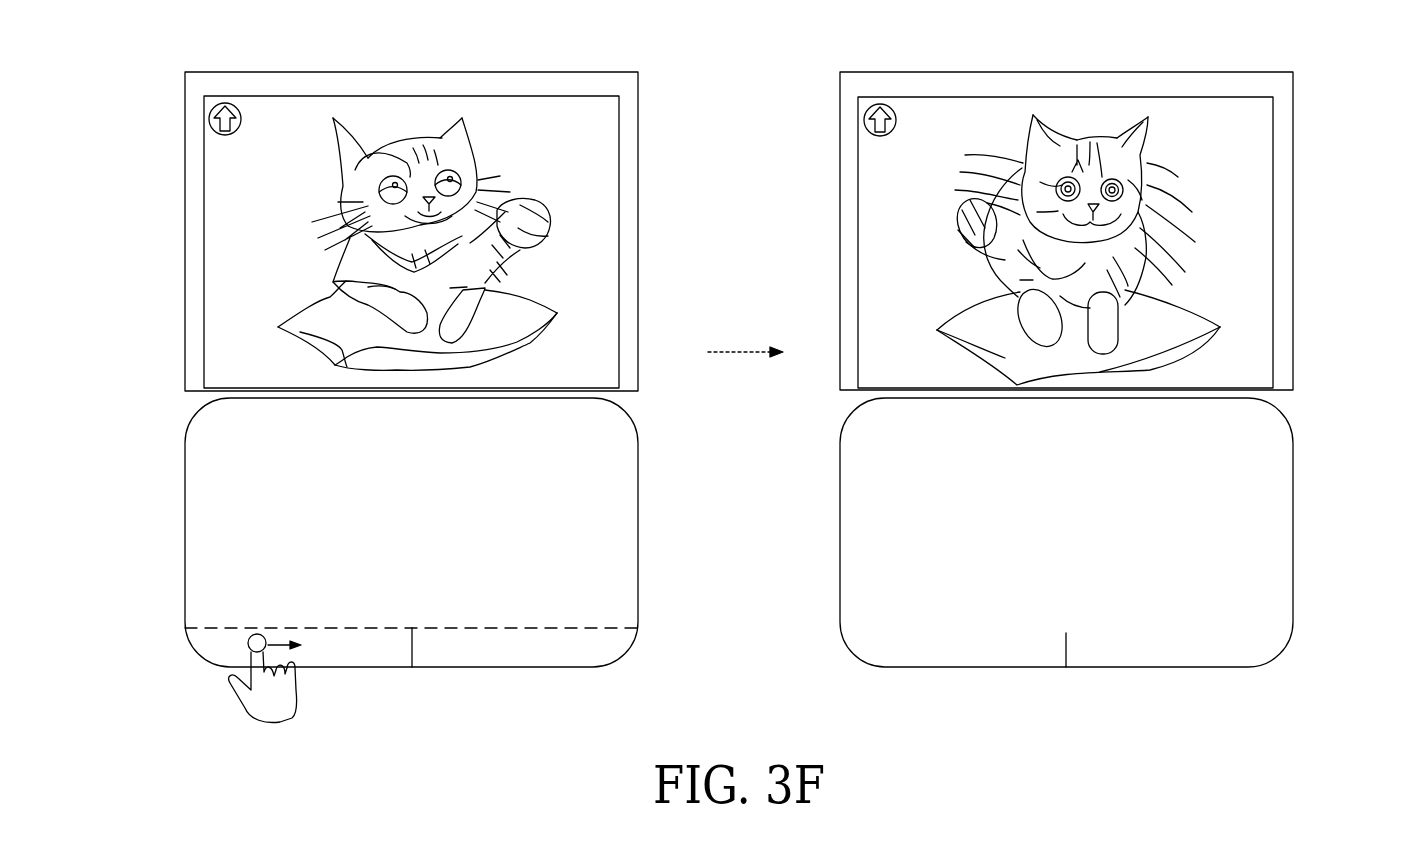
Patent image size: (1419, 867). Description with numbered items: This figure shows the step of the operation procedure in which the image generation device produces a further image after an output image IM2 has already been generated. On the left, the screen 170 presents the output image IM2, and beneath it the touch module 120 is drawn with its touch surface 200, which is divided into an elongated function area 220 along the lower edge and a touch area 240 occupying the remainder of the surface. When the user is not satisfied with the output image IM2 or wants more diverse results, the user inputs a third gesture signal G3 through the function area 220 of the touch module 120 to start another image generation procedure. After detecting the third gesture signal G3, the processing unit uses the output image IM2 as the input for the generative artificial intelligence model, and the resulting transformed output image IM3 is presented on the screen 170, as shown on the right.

The screen 170 is at (588, 128).
The output image IM2 is at (240, 227).
The transformed output image IM3 is at (888, 213).
The touch surface 200 is at (640, 448).
The touch area 240 is at (620, 560).
The function area 220 is at (612, 647).
The touch module 120 is at (158, 540).
The third gesture signal G3 is at (283, 678).